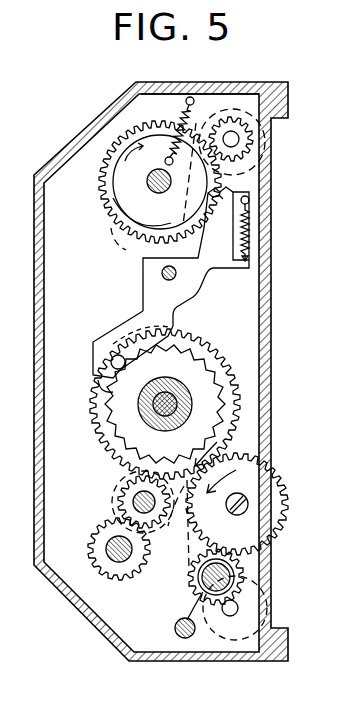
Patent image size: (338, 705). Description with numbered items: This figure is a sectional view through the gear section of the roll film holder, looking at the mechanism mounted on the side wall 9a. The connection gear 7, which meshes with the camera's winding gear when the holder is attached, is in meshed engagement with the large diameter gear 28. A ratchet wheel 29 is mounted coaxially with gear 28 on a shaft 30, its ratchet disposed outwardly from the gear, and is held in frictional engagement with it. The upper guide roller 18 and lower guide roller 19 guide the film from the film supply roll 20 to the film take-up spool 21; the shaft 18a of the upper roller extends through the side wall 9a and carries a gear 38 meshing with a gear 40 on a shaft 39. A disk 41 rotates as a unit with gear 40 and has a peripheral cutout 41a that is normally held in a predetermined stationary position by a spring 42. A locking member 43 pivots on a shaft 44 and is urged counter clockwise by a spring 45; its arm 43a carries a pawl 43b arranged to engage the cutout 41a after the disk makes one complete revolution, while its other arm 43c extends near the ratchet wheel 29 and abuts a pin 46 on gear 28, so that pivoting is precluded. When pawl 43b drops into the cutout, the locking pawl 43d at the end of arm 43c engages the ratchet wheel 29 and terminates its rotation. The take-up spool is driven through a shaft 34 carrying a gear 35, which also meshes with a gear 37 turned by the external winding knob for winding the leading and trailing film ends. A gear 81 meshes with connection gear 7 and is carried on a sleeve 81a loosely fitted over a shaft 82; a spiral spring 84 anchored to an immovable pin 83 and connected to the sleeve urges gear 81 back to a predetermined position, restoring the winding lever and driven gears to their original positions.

The connection gear 7 is at (276, 489).
The side wall 9a is at (56, 168).
The upper guide roller 18 is at (240, 106).
The shaft 18a is at (231, 139).
The lower guide roller 19 is at (212, 640).
The film supply roll 20 is at (107, 236).
The film take-up spool 21 is at (178, 548).
The large diameter gear 28 is at (190, 342).
The ratchet wheel 29 is at (186, 376).
The shaft 30 is at (140, 410).
The shaft 34 is at (128, 494).
The gear 35 is at (106, 505).
The gear 37 is at (80, 549).
The gear 38 is at (219, 117).
The shaft 39 is at (139, 182).
The gear 40 is at (92, 194).
The disk 41 is at (96, 158).
The cutout 41a is at (243, 179).
The spring 42 is at (173, 117).
The locking member 43 is at (203, 280).
The arm 43a is at (241, 243).
The pawl 43b is at (241, 210).
The other arm 43c is at (103, 337).
The locking pawl 43d is at (91, 383).
The shaft 44 is at (154, 273).
The spring 45 is at (216, 233).
The pin 46 is at (86, 348).
The gear 81 is at (236, 567).
The sleeve 81a is at (234, 583).
The shaft 82 is at (192, 567).
The immovable pin 83 is at (167, 631).
The spiral spring 84 is at (185, 606).